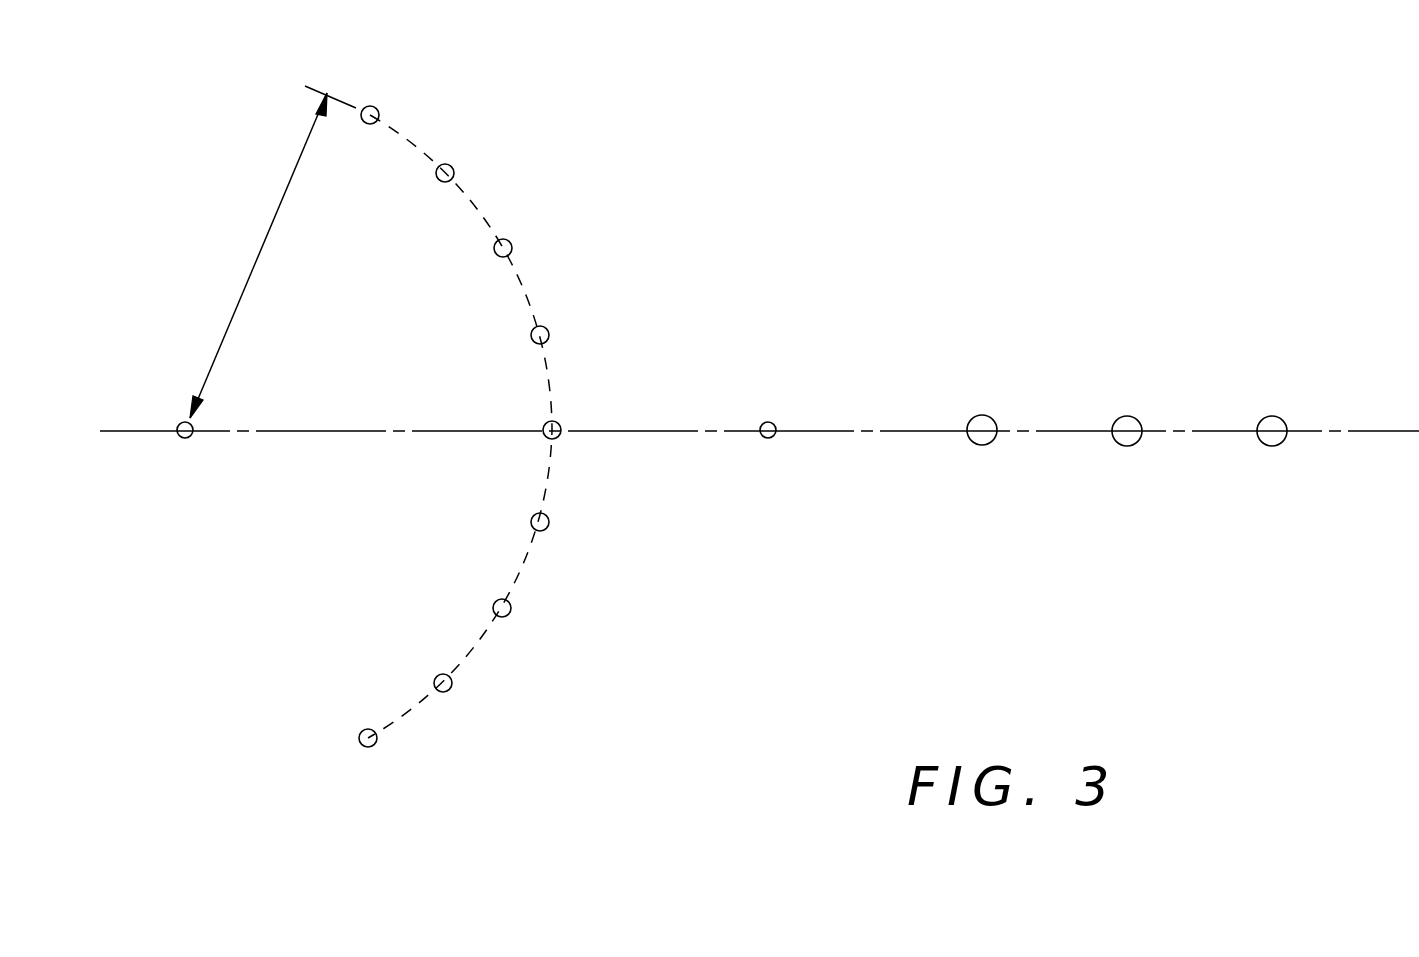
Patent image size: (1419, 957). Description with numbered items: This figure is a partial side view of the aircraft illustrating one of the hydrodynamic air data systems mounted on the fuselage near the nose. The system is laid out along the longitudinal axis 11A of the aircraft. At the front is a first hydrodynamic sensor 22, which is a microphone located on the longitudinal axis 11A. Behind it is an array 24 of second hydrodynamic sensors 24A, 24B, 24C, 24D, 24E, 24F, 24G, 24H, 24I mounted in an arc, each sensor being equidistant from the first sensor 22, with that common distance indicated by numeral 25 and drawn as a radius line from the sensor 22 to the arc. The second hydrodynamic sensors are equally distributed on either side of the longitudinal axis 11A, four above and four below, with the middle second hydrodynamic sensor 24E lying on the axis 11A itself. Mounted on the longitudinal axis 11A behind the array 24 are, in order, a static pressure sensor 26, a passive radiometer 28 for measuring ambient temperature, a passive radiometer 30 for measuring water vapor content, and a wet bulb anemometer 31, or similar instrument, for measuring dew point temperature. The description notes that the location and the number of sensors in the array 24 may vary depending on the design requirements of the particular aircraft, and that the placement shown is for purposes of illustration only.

The longitudinal axis 11A is at (1372, 433).
The first hydrodynamic sensor 22 is at (185, 438).
The array of second hydrodynamic sensors 24 is at (730, 248).
The second hydrodynamic sensor 24A is at (376, 107).
The second hydrodynamic sensor 24B is at (452, 166).
The second hydrodynamic sensor 24C is at (510, 242).
The second hydrodynamic sensor 24D is at (548, 330).
The second hydrodynamic sensor 24E is at (560, 425).
The second hydrodynamic sensor 24F is at (549, 524).
The second hydrodynamic sensor 24G is at (511, 612).
The second hydrodynamic sensor 24H is at (450, 689).
The second hydrodynamic sensor 24I is at (372, 747).
The distance 25 is at (248, 282).
The static pressure sensor 26 is at (769, 422).
The passive radiometer 28 is at (980, 415).
The passive radiometer 30 is at (1122, 416).
The wet bulb anemometer 31 is at (1269, 416).